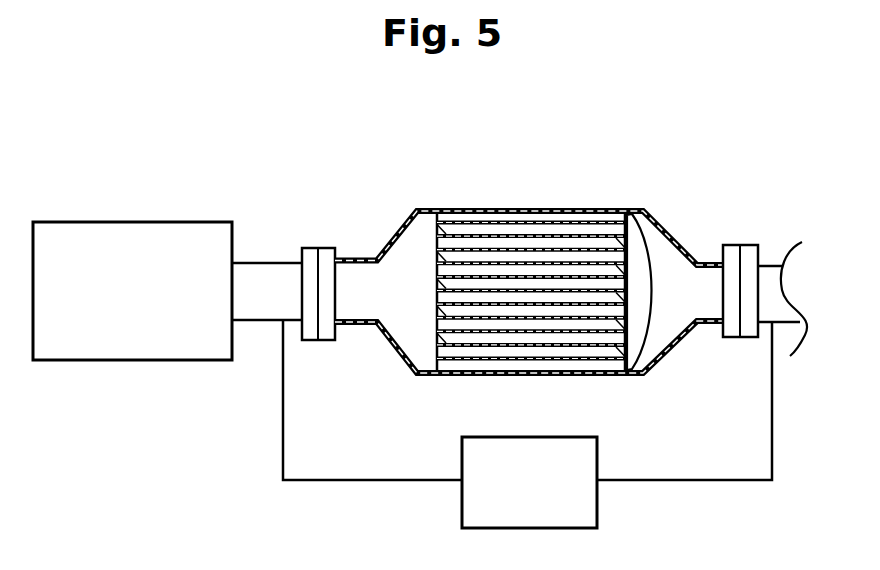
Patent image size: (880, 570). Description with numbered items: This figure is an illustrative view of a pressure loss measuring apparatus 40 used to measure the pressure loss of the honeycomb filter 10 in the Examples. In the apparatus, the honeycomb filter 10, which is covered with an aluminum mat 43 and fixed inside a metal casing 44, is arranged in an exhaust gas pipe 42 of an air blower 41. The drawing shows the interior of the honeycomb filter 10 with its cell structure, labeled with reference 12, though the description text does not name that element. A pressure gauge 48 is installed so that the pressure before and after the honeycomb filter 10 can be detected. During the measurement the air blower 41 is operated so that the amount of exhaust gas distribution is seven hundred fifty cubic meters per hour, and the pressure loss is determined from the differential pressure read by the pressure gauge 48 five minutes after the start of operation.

The pressure loss measuring apparatus 40 is at (529, 223).
The air blower 41 is at (138, 222).
The exhaust gas pipe 42 is at (262, 263).
The honeycomb filter 10 is at (441, 222).
The cell walls 12 is at (490, 262).
The metal casing 44 is at (557, 207).
The aluminum mat 43 is at (640, 212).
The pressure gauge 48 is at (597, 445).